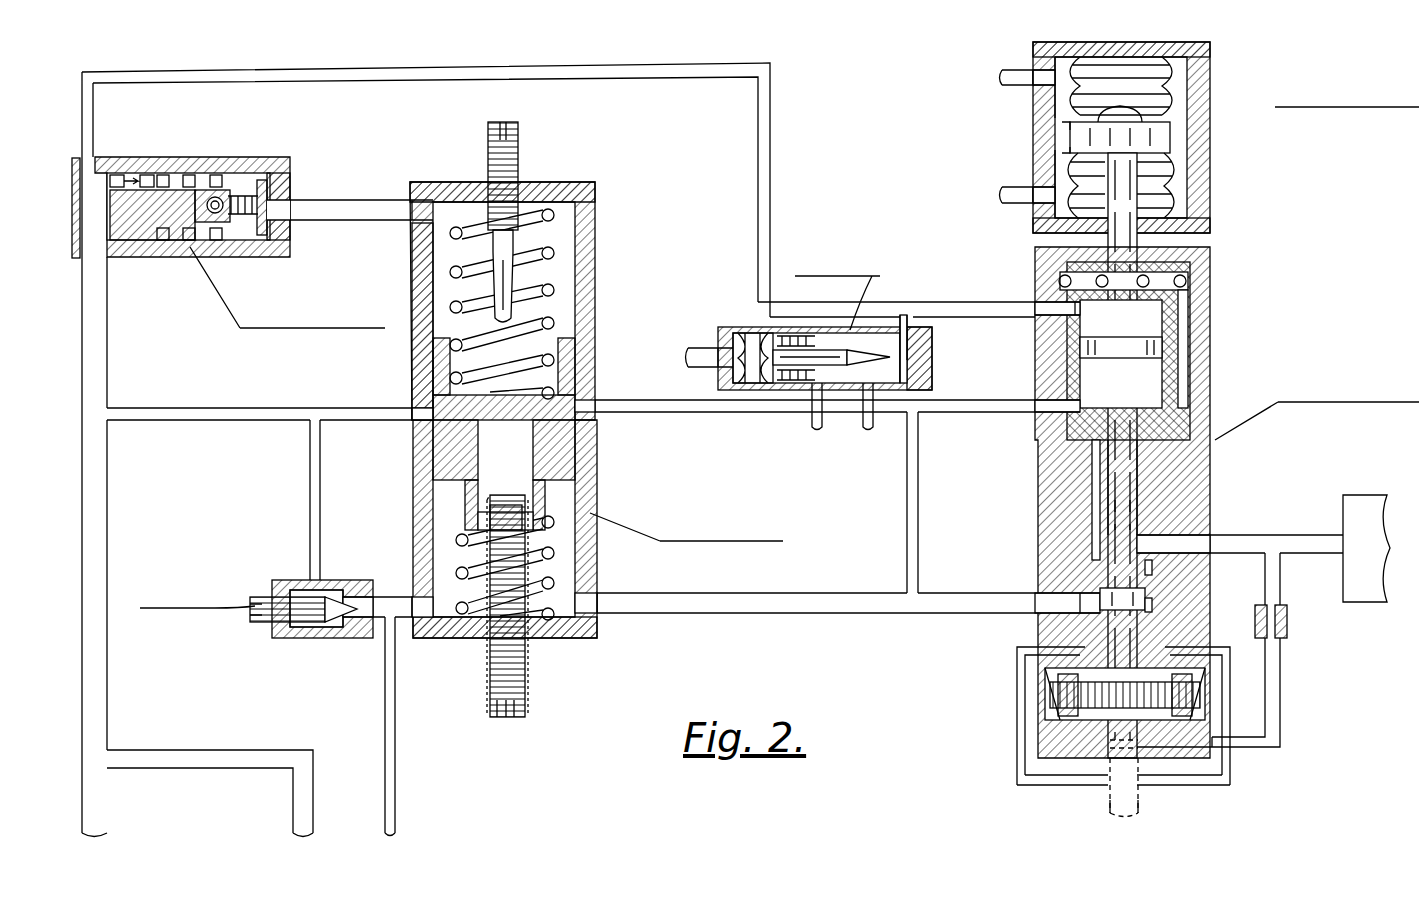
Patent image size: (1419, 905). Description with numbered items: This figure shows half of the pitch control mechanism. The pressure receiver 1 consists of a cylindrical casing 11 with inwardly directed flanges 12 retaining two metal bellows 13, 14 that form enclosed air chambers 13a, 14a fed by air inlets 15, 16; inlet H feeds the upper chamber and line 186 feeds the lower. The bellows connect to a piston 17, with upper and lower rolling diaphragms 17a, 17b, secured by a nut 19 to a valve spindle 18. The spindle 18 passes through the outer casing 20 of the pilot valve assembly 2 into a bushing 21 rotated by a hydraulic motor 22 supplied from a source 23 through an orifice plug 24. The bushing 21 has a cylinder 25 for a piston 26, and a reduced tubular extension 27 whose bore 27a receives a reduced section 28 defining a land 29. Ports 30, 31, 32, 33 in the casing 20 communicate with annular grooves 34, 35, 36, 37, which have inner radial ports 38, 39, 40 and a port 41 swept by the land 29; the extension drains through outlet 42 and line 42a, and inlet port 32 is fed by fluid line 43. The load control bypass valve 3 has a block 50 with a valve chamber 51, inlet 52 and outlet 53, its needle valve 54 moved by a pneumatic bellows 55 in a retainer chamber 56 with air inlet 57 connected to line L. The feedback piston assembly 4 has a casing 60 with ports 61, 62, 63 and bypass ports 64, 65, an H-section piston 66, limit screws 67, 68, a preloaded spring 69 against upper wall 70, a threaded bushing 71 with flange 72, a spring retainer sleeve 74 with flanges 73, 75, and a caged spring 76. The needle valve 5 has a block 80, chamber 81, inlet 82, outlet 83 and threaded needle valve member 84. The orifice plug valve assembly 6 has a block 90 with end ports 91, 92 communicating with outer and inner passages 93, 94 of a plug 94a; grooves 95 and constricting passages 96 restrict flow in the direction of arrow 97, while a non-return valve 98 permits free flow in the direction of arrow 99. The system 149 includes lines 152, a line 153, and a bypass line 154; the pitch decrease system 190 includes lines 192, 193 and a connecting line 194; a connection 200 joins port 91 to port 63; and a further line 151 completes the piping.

The pressure receiver 1 is at (1218, 150).
The pilot valve assembly 2 is at (1215, 452).
The load control bypass valve 3 is at (932, 360).
The feedback piston assembly 4 is at (602, 478).
The needle valve 5 is at (301, 568).
The orifice plug valve assembly 6 is at (208, 152).
The cylindrical casing 11 is at (1200, 100).
The inwardly directed flanges 12 is at (1190, 50).
The metal bellows 13 is at (1185, 80).
The air chamber 13a is at (1060, 95).
The metal bellows 14 is at (1180, 178).
The air chamber 14a is at (1050, 228).
The air inlet 15 is at (1045, 75).
The air inlet 16 is at (1060, 200).
The piston 17 is at (1072, 140).
The upper rolling diaphragm 17a is at (1065, 130).
The lower rolling diaphragm 17b is at (1062, 158).
The valve spindle 18 is at (1130, 210).
The nut 19 is at (1160, 118).
The outer casing 20 is at (1215, 336).
The bushing 21 is at (1180, 422).
The hydraulic motor 22 is at (1180, 700).
The source of hydraulic fluid under pressure 23 is at (1360, 500).
The orifice plug 24 is at (1288, 622).
The cylinder 25 is at (1150, 320).
The piston 26 is at (1150, 348).
The reduced tubular extension 27 is at (1150, 500).
The bore 27a is at (1105, 520).
The section of reduced diameter 28 is at (1130, 520).
The land 29 is at (1125, 606).
The port 30 is at (1060, 302).
The port 31 is at (1060, 406).
The inlet port 32 is at (1160, 562).
The port 33 is at (1085, 600).
The external annular groove 34 is at (1185, 296).
The external annular groove 35 is at (1175, 392).
The external annular groove 36 is at (1095, 547).
The external annular groove 37 is at (1160, 600).
The inner radial port 38 is at (1050, 315).
The inner radial port 39 is at (1060, 396).
The inner radial port 40 is at (1200, 530).
The port 41 is at (1050, 620).
The outlet 42 is at (1118, 745).
The line 42a is at (1130, 796).
The fluid line 43 is at (1272, 565).
The block 50 is at (832, 327).
The valve chamber 51 is at (868, 350).
The inlet 52 is at (868, 400).
The outlet 53 is at (925, 342).
The needle valve 54 is at (822, 400).
The pneumatic bellows 55 is at (745, 334).
The retainer chamber 56 is at (752, 385).
The air inlet 57 is at (724, 360).
The cylindrical casing 60 is at (597, 296).
The first port 61 is at (590, 628).
The second port 62 is at (425, 640).
The port 63 is at (425, 202).
The bypass port 64 is at (596, 393).
The bypass port 65 is at (420, 410).
The H-section piston 66 is at (565, 376).
The limit screw 67 is at (520, 152).
The limit screw 68 is at (520, 690).
The preloaded coiled spring 69 is at (565, 252).
The upper wall 70 is at (557, 182).
The threaded bushing 71 is at (490, 658).
The flange 72 is at (533, 522).
The flange 73 is at (533, 536).
The spring retainer sleeve 74 is at (575, 460).
The flange 75 is at (433, 440).
The coiled spring 76 is at (550, 582).
The block 80 is at (310, 638).
The chamber 81 is at (330, 590).
The inlet 82 is at (318, 580).
The outlet 83 is at (360, 638).
The needle valve member 84 is at (340, 592).
The block 90 is at (262, 157).
The end port 91 is at (270, 206).
The end port 92 is at (118, 176).
The outer passage 93 is at (215, 213).
The inner passage 94 is at (212, 222).
The plug 94a is at (156, 257).
The circumferential grooves 95 is at (160, 176).
The axial constricting passages 96 is at (206, 176).
The arrow 97 is at (282, 176).
The spring loaded non-return valve 98 is at (240, 222).
The arrow 99 is at (138, 176).
The system 149 is at (568, 72).
The drain conduit 151 is at (395, 748).
The lines 152 is at (107, 520).
The line 153 is at (690, 78).
The bypass line 154 is at (262, 408).
The line 186 is at (1002, 195).
The pitch decrease system 190 is at (752, 593).
The line 192 is at (820, 613).
The line 193 is at (678, 410).
The connecting line 194 is at (907, 482).
The connection 200 is at (344, 225).
The high pressure inlet H is at (1002, 78).
The line L is at (706, 350).